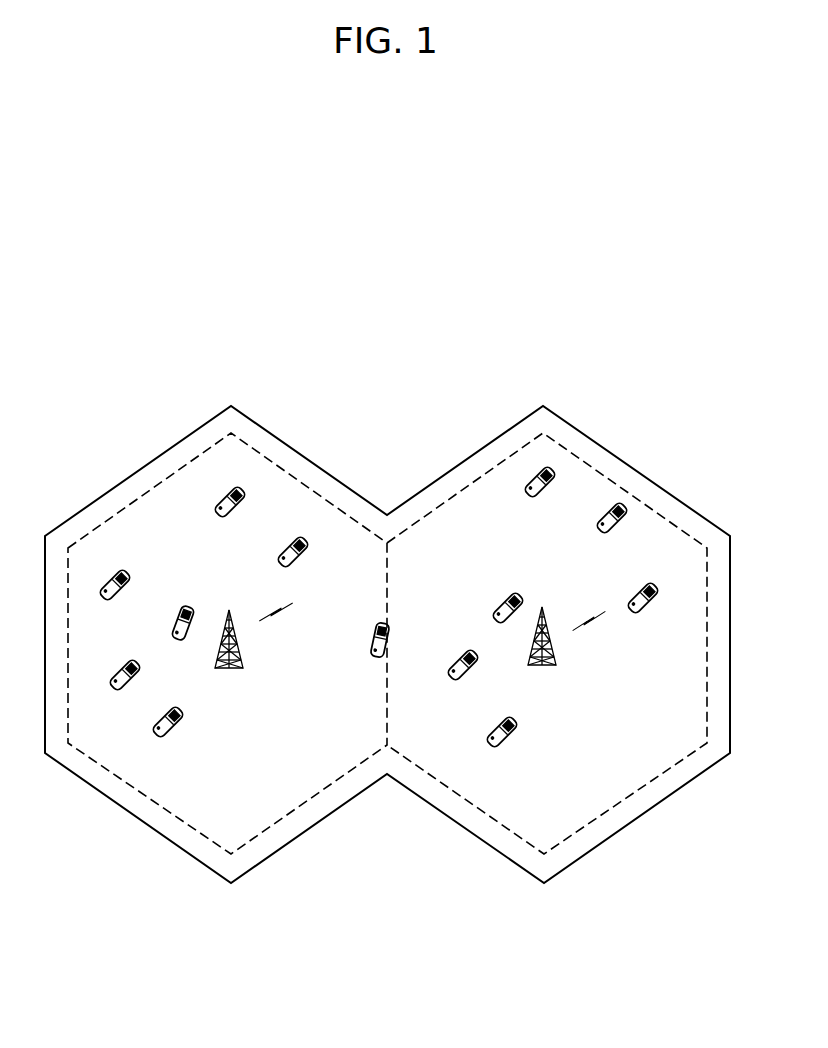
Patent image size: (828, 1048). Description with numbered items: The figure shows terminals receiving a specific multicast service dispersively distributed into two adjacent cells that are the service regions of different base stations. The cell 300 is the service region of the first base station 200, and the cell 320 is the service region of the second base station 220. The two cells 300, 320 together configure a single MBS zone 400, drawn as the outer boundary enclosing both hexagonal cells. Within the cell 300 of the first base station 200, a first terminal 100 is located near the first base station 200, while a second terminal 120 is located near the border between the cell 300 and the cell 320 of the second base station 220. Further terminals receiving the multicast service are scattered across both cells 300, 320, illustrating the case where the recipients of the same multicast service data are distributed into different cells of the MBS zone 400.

The first terminal 100 is at (181, 600).
The second terminal 120 is at (382, 618).
The first base station 200 is at (242, 647).
The second base station 220 is at (557, 652).
The cell 300 is at (187, 824).
The cell 320 is at (607, 810).
The MBS zone 400 is at (306, 833).